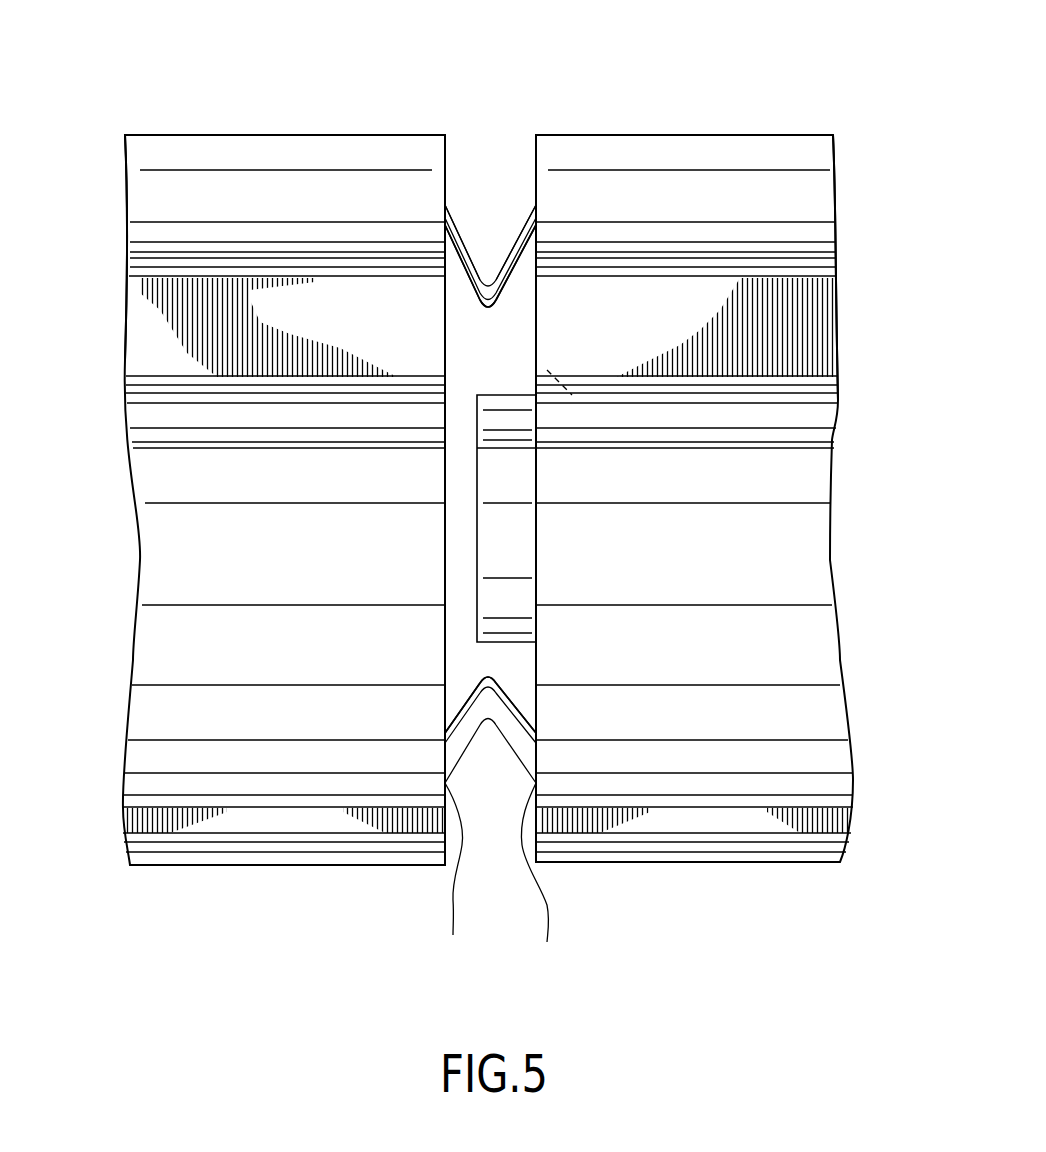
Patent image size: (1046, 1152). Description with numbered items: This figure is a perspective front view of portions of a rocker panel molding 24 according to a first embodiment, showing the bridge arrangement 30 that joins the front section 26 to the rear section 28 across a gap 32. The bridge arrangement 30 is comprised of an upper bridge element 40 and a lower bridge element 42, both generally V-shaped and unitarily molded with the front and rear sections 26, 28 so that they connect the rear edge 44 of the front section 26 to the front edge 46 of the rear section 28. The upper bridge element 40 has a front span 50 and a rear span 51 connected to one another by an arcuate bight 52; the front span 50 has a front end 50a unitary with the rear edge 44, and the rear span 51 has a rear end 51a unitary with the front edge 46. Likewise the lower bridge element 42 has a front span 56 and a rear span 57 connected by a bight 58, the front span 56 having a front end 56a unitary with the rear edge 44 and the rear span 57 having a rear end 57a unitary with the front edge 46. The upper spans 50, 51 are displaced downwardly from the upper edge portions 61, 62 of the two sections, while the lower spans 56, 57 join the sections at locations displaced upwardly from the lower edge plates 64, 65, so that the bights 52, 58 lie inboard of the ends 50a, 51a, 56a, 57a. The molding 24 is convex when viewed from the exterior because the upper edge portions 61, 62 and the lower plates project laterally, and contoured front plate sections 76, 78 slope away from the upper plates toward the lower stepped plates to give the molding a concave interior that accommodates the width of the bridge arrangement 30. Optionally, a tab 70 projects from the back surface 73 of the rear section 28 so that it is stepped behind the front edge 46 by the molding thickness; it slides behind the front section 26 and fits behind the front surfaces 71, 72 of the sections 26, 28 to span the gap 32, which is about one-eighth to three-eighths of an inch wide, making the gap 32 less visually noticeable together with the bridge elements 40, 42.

The rocker panel molding 24 is at (283, 128).
The front section 26 is at (368, 135).
The rear section 28 is at (677, 143).
The bridge arrangement 30 is at (512, 243).
The gap 32 is at (475, 373).
The upper bridge element 40 is at (488, 285).
The lower bridge element 42 is at (490, 722).
The rear edge 44 is at (457, 148).
The front edge 46 is at (519, 148).
The front span 50 is at (450, 278).
The front end 50a is at (443, 217).
The rear span 51 is at (498, 284).
The rear end 51a is at (538, 217).
The arcuate bight 52 is at (488, 307).
The front span 56 is at (463, 701).
The front end 56a is at (455, 874).
The rear span 57 is at (522, 701).
The rear end 57a is at (546, 881).
The bight 58 is at (490, 675).
The upper edge portion 61 is at (195, 135).
The upper edge portion 62 is at (800, 135).
The lower edge plate 64 is at (258, 867).
The lower edge plate 65 is at (748, 864).
The tab 70 is at (508, 535).
The front surface 71 is at (274, 567).
The front surface 72 is at (706, 567).
The back surface 73 is at (546, 356).
The contoured front plate section 76 is at (162, 755).
The contoured front plate section 78 is at (792, 463).